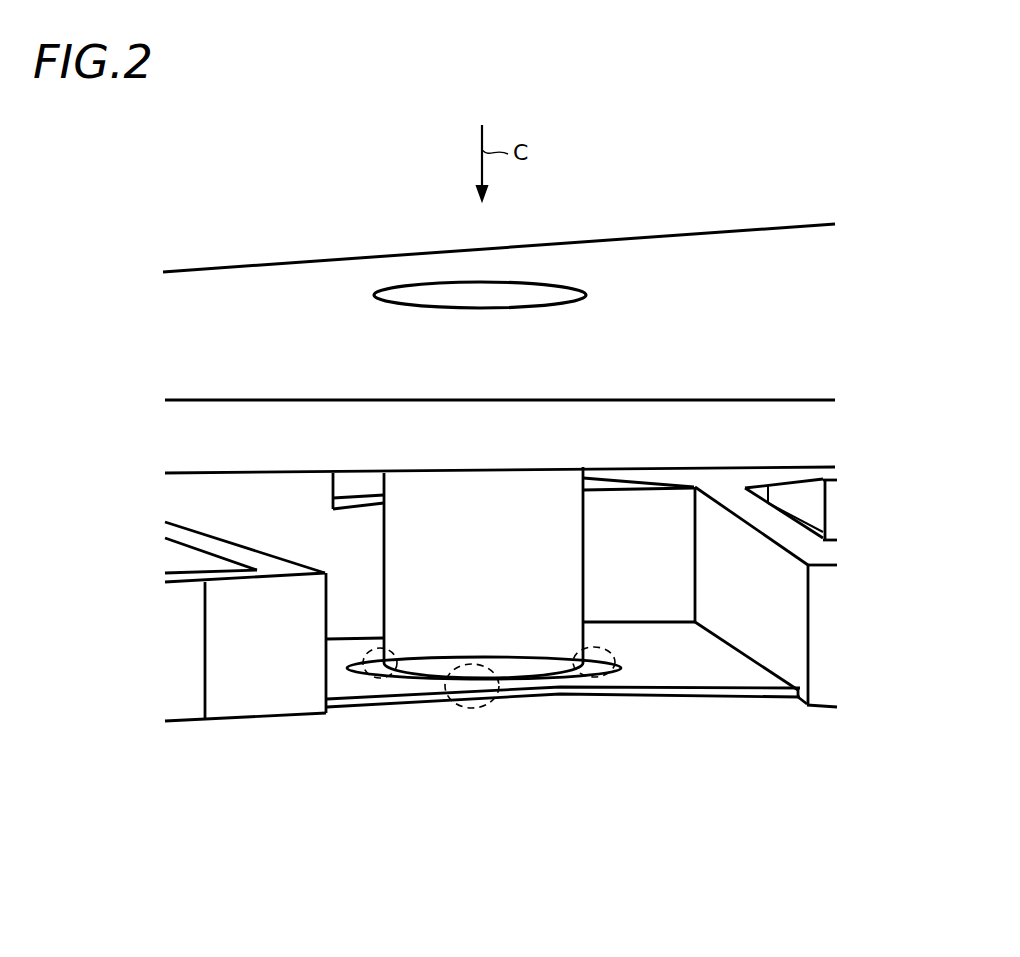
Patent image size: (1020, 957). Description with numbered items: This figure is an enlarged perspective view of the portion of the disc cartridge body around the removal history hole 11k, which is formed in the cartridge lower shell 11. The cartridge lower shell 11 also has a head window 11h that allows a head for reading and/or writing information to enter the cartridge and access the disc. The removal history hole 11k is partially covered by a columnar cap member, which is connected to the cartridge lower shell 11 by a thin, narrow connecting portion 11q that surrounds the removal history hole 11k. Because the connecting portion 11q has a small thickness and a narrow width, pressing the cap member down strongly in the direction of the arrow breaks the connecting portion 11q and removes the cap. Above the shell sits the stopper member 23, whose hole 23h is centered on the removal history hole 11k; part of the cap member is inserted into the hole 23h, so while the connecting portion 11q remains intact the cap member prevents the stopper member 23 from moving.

The cartridge lower shell 11 is at (265, 701).
The head window 11h is at (550, 565).
The removal history hole 11k is at (537, 696).
The connecting portion 11q is at (600, 680).
The stopper member 23 is at (272, 291).
The hole of stopper member 23h is at (568, 283).